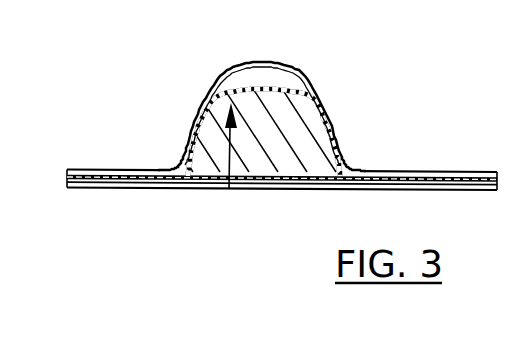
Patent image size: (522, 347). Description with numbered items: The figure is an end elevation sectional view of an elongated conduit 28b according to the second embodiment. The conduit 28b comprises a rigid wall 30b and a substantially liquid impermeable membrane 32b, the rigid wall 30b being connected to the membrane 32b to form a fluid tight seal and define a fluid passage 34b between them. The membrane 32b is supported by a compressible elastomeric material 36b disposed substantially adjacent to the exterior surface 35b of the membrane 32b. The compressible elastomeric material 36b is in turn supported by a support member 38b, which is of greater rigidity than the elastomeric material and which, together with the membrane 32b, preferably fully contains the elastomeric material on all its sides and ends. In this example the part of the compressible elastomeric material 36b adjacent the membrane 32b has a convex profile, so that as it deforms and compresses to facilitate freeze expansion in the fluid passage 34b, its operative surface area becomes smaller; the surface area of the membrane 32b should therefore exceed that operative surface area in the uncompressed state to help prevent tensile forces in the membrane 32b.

The elongated conduit 28b is at (352, 142).
The rigid wall 30b is at (328, 117).
The membrane 32b is at (314, 108).
The fluid passage 34b is at (281, 80).
The exterior surface 35b is at (229, 188).
The compressible elastomeric material 36b is at (312, 162).
The support member 38b is at (287, 190).